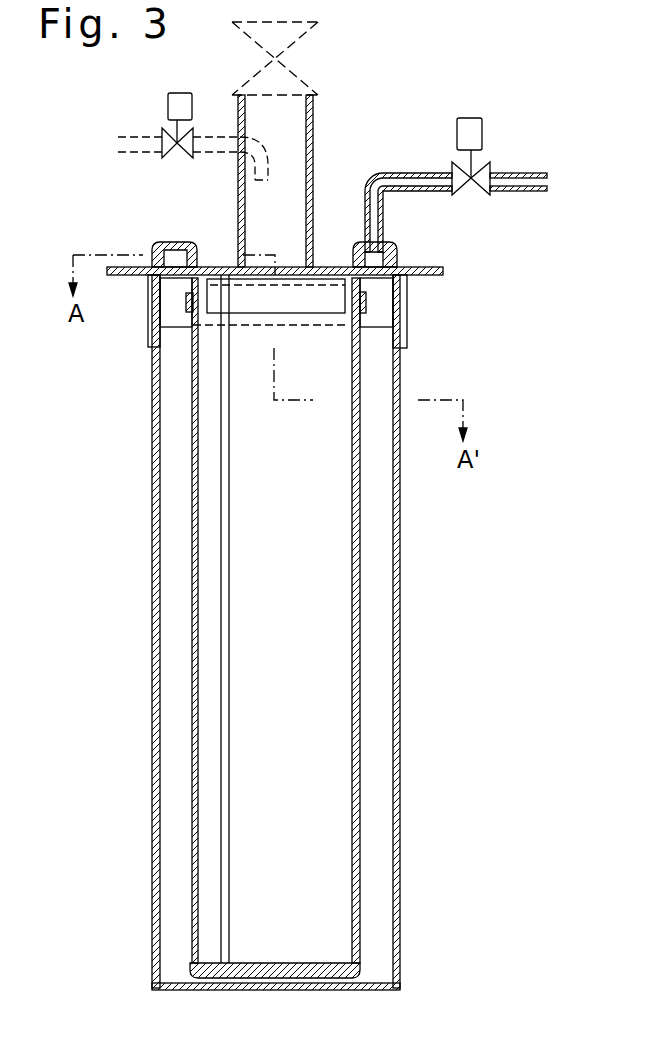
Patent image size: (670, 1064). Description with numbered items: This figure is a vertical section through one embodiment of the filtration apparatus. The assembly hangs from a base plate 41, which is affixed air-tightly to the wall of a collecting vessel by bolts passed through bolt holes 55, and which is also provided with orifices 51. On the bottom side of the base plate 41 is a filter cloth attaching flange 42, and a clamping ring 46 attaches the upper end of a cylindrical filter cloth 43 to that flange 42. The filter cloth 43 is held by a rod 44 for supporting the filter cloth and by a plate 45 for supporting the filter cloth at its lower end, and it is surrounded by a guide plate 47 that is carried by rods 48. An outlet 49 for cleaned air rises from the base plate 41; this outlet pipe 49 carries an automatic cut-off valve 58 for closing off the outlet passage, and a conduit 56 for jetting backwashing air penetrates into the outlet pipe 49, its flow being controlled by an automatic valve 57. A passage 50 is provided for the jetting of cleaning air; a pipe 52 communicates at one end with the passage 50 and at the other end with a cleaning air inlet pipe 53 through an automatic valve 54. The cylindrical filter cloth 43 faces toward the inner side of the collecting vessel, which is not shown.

The base plate 41 is at (112, 270).
The filter cloth attaching flange 42 is at (345, 327).
The cylindrical filter cloth 43 is at (352, 428).
The rod 44 is at (229, 598).
The plate 45 is at (281, 963).
The clamping ring 46 is at (367, 302).
The guide plate 47 is at (400, 490).
The rods 48 is at (152, 347).
The outlet 49 is at (313, 117).
The passage 50 is at (397, 252).
The orifices 51 is at (177, 276).
The pipe 52 is at (365, 223).
The cleaning air inlet pipe 53 is at (548, 172).
The automatic valve 54 is at (490, 170).
The bolt holes 55 is at (125, 277).
The conduit 56 is at (220, 152).
The automatic valve 57 is at (167, 158).
The automatic cut-off valve 58 is at (318, 40).